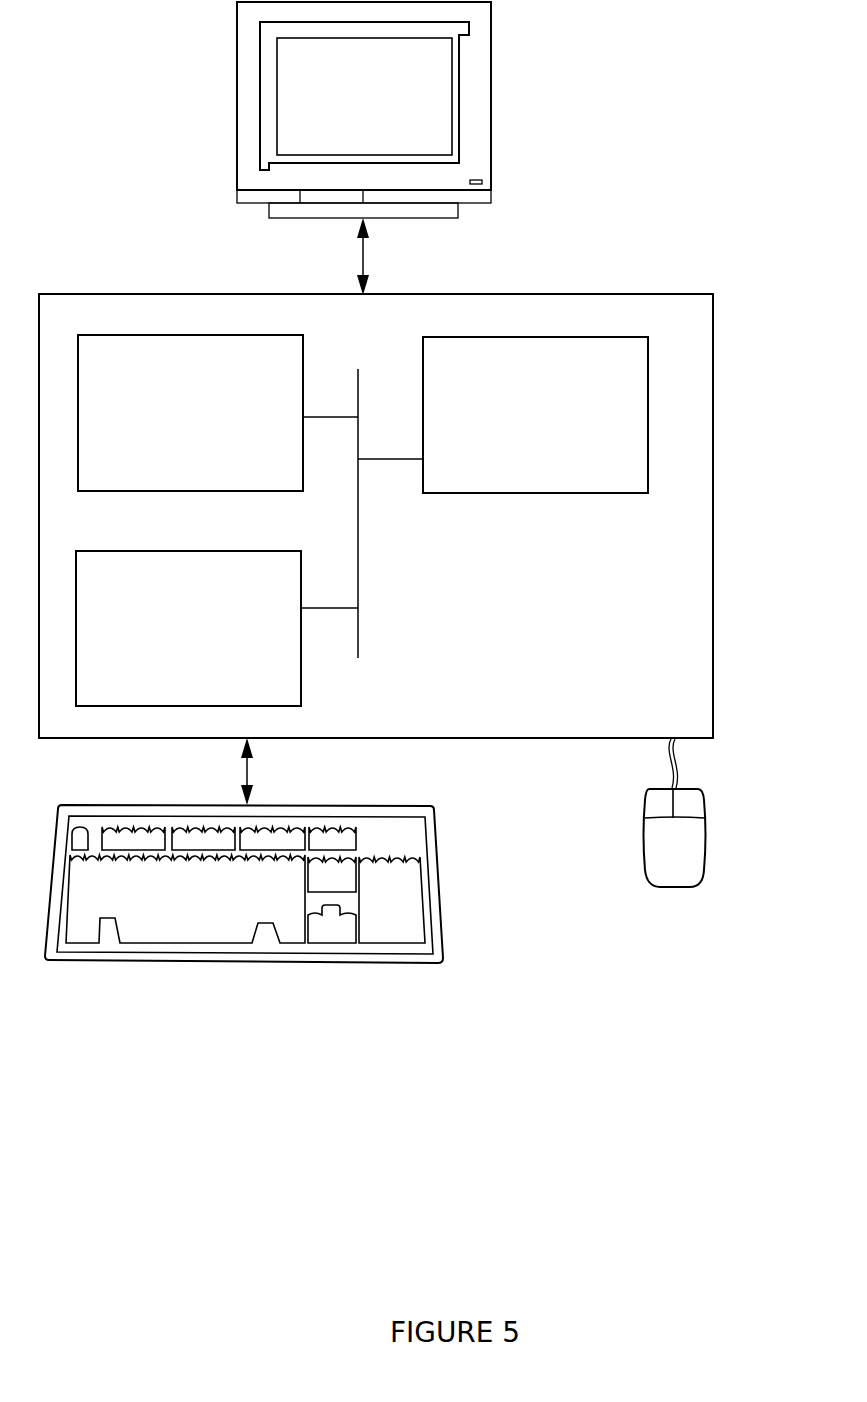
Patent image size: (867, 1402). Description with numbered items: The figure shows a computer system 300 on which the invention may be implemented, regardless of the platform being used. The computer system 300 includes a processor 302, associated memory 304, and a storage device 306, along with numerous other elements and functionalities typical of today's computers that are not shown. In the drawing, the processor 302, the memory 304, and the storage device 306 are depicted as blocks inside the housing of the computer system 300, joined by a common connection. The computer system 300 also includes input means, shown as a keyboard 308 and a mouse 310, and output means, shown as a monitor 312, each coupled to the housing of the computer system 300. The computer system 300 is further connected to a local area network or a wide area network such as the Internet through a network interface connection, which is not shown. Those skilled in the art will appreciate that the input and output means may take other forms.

The computer system 300 is at (690, 170).
The processor 302 is at (573, 428).
The associated memory 304 is at (212, 427).
The storage device 306 is at (205, 642).
The keyboard 308 is at (197, 925).
The mouse 310 is at (693, 862).
The monitor 312 is at (384, 112).